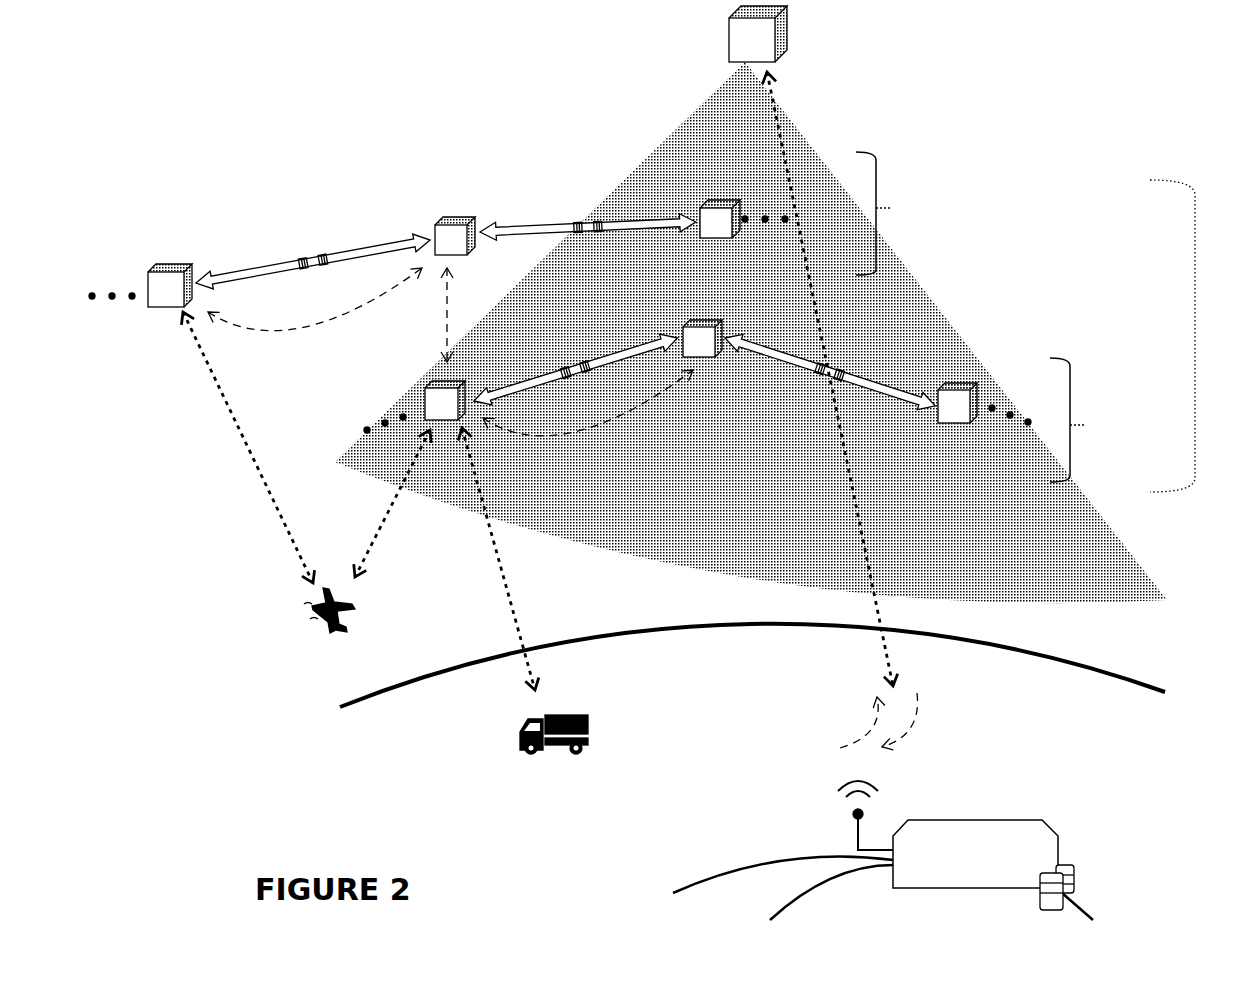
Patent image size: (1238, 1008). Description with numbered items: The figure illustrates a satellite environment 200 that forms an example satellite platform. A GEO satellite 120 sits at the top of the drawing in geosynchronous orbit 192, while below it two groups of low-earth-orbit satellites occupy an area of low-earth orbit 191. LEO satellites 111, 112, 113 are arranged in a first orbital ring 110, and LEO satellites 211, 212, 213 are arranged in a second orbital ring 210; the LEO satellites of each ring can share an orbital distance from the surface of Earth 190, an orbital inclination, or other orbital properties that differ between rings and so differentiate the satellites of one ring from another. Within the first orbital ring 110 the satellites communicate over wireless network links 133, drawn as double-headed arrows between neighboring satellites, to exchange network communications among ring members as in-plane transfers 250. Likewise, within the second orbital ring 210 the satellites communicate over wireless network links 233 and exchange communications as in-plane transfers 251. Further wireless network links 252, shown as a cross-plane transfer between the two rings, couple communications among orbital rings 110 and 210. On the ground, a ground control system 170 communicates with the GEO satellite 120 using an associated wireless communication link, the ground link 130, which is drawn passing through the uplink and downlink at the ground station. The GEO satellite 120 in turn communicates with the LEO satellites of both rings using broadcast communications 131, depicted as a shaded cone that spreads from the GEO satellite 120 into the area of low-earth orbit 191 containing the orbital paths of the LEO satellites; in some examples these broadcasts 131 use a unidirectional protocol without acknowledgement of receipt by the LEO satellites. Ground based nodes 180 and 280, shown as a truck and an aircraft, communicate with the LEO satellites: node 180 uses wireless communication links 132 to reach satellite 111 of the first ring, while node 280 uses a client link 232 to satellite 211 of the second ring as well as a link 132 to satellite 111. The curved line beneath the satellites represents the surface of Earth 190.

The satellite environment 200 is at (124, 100).
The GEO satellite 120 is at (758, 34).
The geosynchronous orbit 192 is at (952, 42).
The LEO satellite 211 is at (140, 285).
The LEO satellite 212 is at (455, 236).
The LEO satellite 213 is at (744, 219).
The wireless network links 233 is at (262, 263).
The second orbital ring 210 is at (898, 213).
The low-earth orbit 191 is at (1192, 336).
The in-plane transfers 251 is at (315, 319).
The wireless network links 252 is at (486, 315).
The in-plane transfers 250 is at (588, 422).
The LEO satellite 111 is at (414, 407).
The LEO satellite 112 is at (702, 338).
The LEO satellite 113 is at (984, 404).
The wireless network links 133 is at (541, 376).
The first orbital ring 110 is at (1092, 420).
The broadcast communications 131 is at (751, 332).
The ground link 130 is at (838, 379).
The client link 232 is at (248, 447).
The wireless communication links 132 is at (437, 559).
The ground based node 280 is at (338, 626).
The ground based node 180 is at (588, 731).
The Earth 190 is at (755, 690).
The ground control system 170 is at (883, 806).